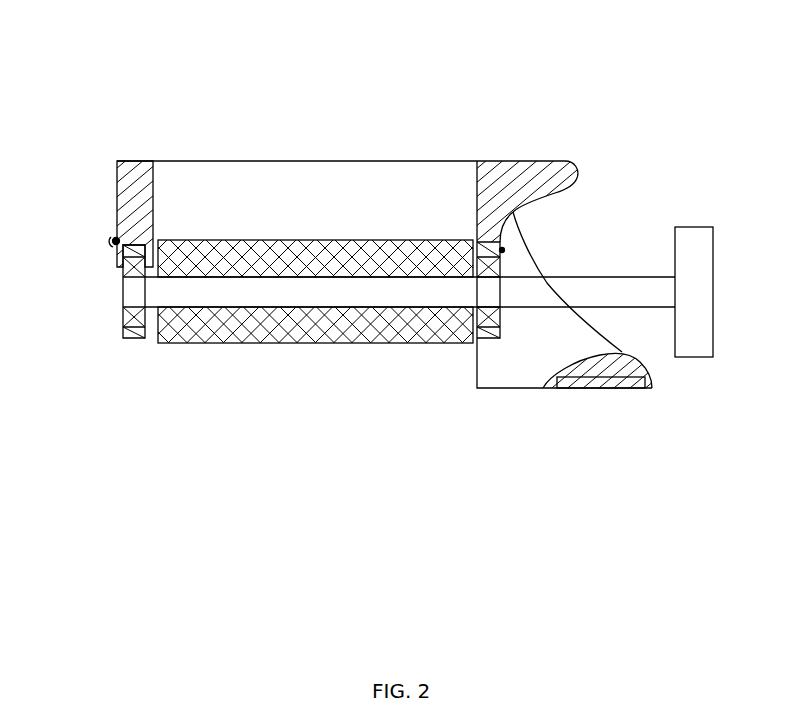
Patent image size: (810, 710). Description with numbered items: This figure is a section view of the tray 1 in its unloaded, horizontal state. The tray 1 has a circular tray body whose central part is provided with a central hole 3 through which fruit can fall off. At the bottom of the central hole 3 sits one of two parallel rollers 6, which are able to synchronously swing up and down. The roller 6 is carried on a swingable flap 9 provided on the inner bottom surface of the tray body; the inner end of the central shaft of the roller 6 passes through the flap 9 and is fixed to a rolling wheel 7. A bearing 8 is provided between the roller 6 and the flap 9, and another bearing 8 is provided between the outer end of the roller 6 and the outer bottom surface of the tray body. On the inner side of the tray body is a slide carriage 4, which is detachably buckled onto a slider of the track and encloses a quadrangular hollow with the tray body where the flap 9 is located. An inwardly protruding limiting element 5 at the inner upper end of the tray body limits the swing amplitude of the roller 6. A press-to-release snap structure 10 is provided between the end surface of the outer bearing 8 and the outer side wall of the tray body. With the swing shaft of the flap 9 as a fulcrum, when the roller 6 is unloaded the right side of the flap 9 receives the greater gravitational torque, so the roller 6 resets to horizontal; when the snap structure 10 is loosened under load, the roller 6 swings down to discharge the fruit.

The tray 1 is at (143, 178).
The central hole 3 is at (252, 208).
The slide carriage 4 is at (610, 377).
The limiting element 5 is at (560, 157).
The roller 6 is at (258, 343).
The rolling wheel 7 is at (693, 255).
The bearing 8 is at (127, 338).
The flap 9 is at (477, 353).
The snap structure 10 is at (110, 233).